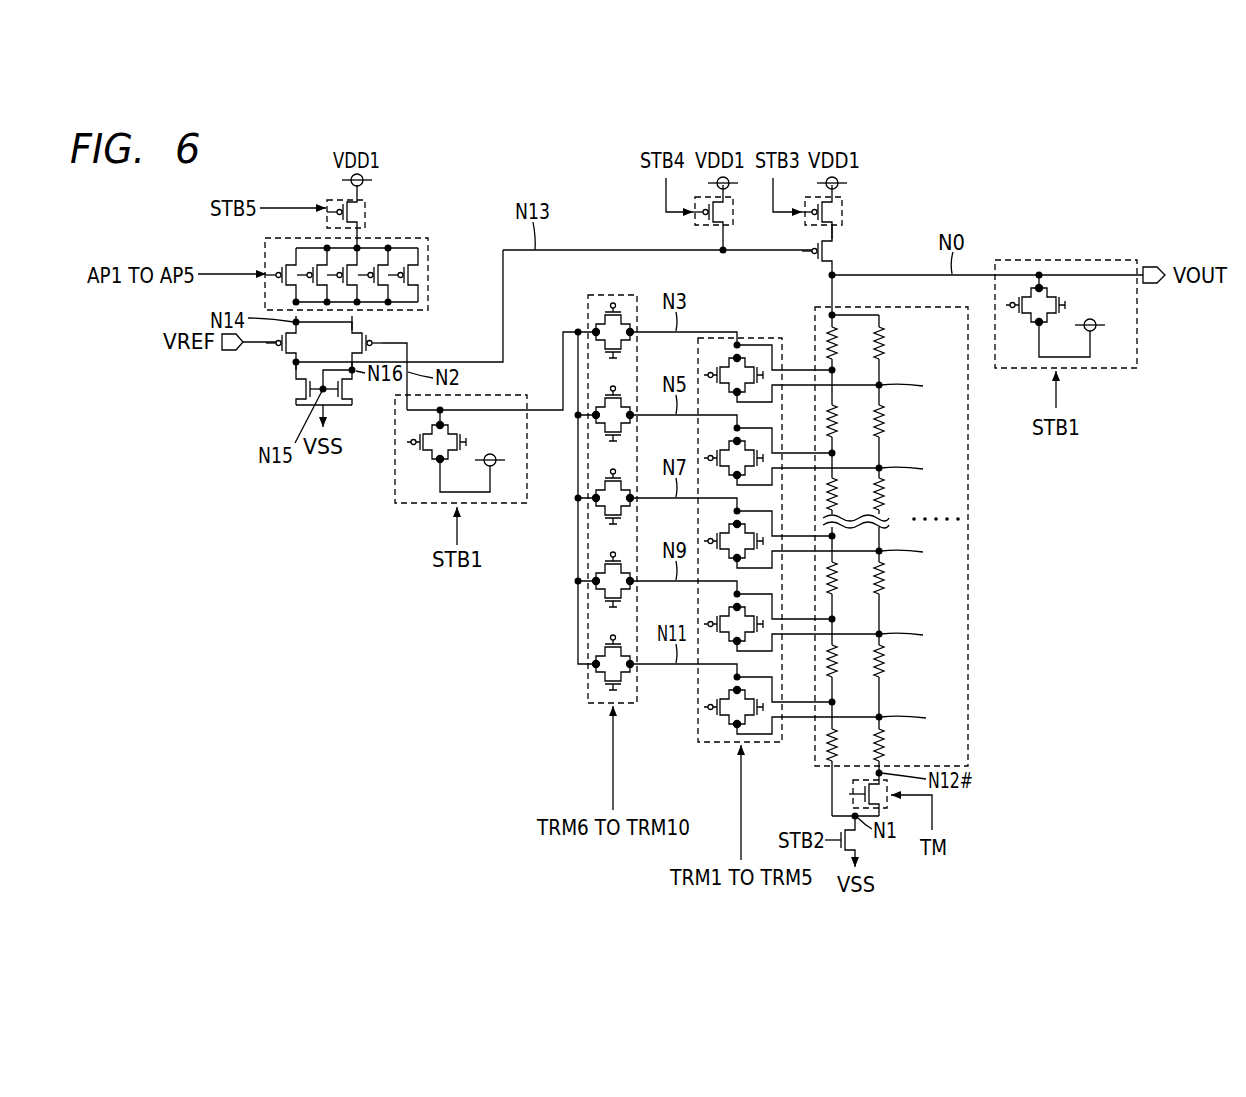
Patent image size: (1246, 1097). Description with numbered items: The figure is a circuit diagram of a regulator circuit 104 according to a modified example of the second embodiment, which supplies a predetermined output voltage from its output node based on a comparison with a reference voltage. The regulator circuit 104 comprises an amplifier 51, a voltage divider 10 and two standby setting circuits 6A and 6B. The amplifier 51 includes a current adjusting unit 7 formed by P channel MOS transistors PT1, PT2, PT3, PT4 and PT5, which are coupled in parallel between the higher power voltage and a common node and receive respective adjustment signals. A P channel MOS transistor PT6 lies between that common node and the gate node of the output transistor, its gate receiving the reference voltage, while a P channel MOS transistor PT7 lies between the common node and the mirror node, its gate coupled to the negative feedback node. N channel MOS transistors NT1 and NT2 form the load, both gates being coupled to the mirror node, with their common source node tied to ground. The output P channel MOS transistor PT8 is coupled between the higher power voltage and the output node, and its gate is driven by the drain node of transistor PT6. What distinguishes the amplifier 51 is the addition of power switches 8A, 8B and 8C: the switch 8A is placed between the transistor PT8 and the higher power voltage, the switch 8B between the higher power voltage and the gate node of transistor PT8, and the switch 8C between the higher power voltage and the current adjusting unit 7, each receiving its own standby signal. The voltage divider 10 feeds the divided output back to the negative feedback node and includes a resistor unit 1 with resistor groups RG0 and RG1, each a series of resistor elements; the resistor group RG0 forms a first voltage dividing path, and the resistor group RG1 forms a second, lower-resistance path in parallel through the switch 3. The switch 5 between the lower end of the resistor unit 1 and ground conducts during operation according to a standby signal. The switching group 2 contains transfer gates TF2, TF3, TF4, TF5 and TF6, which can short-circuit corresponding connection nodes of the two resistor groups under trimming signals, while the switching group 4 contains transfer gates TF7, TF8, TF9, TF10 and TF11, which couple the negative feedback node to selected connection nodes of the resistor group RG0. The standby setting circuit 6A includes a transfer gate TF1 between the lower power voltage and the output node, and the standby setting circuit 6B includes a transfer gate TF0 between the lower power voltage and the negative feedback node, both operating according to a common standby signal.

The resistor unit 1 is at (912, 546).
The switching group 2 is at (765, 525).
The switch 3 is at (852, 788).
The switching group 4 is at (585, 483).
The switch 5 is at (862, 843).
The standby setting circuit 6A is at (1066, 295).
The standby setting circuit 6B is at (439, 466).
The current adjusting unit 7 is at (350, 255).
The switch 8A is at (812, 228).
The switch 8B is at (702, 228).
The switch 8C is at (330, 200).
The voltage divider 10 is at (747, 311).
The amplifier 51 is at (576, 221).
The regulator circuit 104 is at (1155, 180).
The P channel MOS transistor PT1 is at (286, 262).
The P channel MOS transistor PT2 is at (316, 286).
The P channel MOS transistor PT3 is at (347, 260).
The P channel MOS transistor PT4 is at (379, 259).
The P channel MOS transistor PT5 is at (411, 263).
The P channel MOS transistor PT6 is at (286, 358).
The P channel MOS transistor PT7 is at (361, 334).
The P channel MOS transistor PT8 is at (838, 253).
The N channel MOS transistor NT1 is at (293, 390).
The N channel MOS transistor NT2 is at (355, 390).
The transfer gate TF0 is at (414, 452).
The transfer gate TF1 is at (1022, 291).
The transfer gate TF2 is at (709, 362).
The transfer gate TF3 is at (709, 445).
The transfer gate TF4 is at (709, 528).
The transfer gate TF5 is at (709, 611).
The transfer gate TF6 is at (709, 694).
The transfer gate TF7 is at (598, 316).
The transfer gate TF8 is at (598, 433).
The transfer gate TF9 is at (598, 516).
The transfer gate TF10 is at (598, 599).
The transfer gate TF11 is at (598, 682).
The resistor group RG0 is at (848, 338).
The resistor group RG1 is at (895, 338).